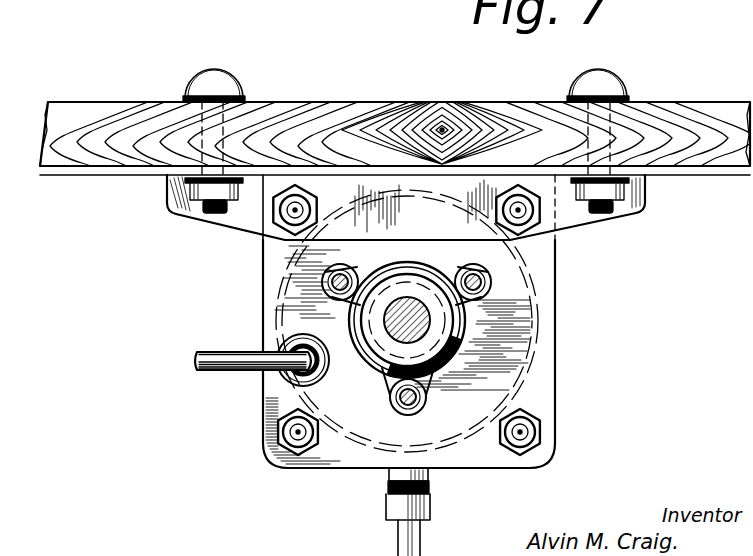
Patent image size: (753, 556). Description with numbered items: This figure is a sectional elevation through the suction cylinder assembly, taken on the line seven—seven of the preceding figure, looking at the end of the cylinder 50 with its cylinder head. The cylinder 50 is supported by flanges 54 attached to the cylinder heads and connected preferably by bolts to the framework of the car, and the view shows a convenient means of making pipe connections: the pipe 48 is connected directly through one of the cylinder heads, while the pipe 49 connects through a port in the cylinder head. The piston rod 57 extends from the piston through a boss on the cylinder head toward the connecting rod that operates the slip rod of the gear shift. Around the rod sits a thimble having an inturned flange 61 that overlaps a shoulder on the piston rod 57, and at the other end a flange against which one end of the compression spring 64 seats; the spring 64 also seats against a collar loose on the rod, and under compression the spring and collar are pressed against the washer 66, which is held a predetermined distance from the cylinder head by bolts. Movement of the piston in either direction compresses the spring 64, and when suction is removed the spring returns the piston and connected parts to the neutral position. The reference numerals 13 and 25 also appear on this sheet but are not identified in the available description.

The operating lever 13 is at (126, 0).
The control rod 25 is at (406, 106).
The pipe 48 is at (217, 372).
The pipe 49 is at (425, 540).
The cylinder 50 is at (537, 307).
The flanges 54 is at (645, 190).
The piston rod 57 is at (428, 335).
The inturned flange 61 is at (440, 312).
The compression spring 64 is at (366, 356).
The washer 66 is at (386, 289).